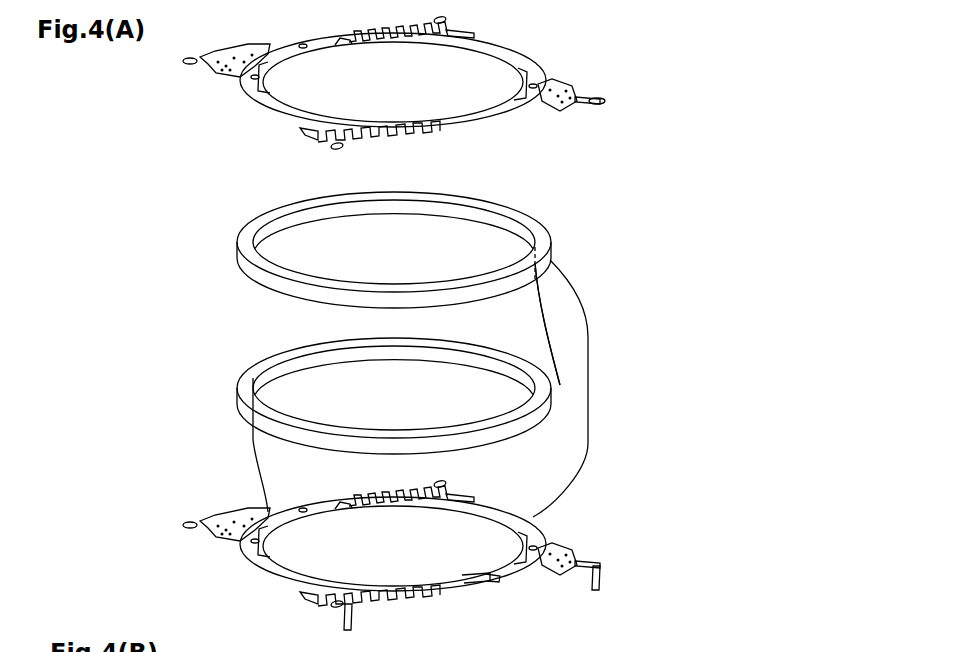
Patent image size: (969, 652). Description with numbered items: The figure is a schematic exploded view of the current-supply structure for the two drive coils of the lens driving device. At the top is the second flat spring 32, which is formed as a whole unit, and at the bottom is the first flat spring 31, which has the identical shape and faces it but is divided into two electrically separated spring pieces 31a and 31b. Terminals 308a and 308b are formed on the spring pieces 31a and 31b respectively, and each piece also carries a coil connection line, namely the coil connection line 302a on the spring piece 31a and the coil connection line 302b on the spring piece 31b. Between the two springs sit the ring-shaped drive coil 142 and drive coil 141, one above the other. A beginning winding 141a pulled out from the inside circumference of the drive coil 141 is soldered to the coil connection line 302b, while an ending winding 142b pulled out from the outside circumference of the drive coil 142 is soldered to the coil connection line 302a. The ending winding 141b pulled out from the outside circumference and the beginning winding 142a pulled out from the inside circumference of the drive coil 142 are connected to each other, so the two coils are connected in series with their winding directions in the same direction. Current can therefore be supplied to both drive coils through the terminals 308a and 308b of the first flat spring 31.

The second flat spring 32 is at (579, 78).
The drive coil 142 is at (235, 248).
The drive coil 141 is at (234, 395).
The beginning winding 141a is at (251, 445).
The beginning winding 142a is at (647, 324).
The ending winding 141b is at (562, 343).
The ending winding 142b is at (598, 443).
The first flat spring 31 is at (412, 566).
The spring piece 31a is at (495, 578).
The spring piece 31b is at (448, 585).
The coil connection line 302a is at (548, 517).
The coil connection line 302b is at (242, 556).
The terminal 308a is at (611, 578).
The terminal 308b is at (360, 618).